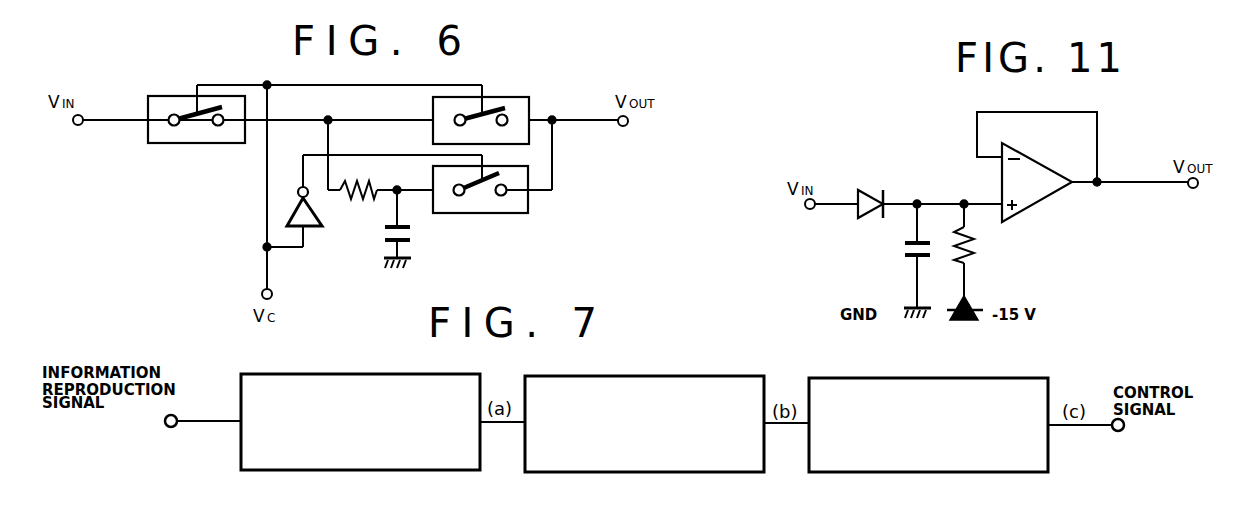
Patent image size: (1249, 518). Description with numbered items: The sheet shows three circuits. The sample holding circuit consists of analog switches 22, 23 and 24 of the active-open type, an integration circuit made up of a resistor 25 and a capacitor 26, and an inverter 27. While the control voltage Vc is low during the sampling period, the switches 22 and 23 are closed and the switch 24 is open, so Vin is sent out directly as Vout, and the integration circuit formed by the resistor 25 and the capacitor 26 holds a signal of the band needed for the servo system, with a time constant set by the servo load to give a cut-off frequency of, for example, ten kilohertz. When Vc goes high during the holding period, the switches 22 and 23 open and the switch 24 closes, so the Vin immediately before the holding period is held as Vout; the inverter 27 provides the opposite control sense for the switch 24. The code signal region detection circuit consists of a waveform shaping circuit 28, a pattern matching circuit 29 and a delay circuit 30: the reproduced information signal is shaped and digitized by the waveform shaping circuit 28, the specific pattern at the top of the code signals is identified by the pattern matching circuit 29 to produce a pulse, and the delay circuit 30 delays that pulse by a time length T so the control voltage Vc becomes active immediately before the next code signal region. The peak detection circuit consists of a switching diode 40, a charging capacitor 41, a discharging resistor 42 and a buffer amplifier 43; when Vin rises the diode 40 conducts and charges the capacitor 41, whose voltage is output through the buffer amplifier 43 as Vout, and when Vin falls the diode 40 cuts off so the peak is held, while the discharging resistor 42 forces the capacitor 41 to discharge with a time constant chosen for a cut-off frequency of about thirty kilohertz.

In FIG. 6, the analog switch 22 is at (163, 96).
In FIG. 6, the analog switch 23 is at (517, 97).
In FIG. 6, the analog switch 24 is at (481, 213).
In FIG. 6, the resistor 25 is at (357, 200).
In FIG. 6, the capacitor 26 is at (410, 238).
In FIG. 6, the inverter 27 is at (318, 228).
In FIG. 7, the waveform shaping circuit 28 is at (420, 374).
In FIG. 7, the pattern matching circuit 29 is at (673, 360).
In FIG. 7, the delay circuit 30 is at (948, 360).
In FIG. 11, the switching diode 40 is at (865, 192).
In FIG. 11, the charging capacitor 41 is at (903, 250).
In FIG. 11, the discharging resistor 42 is at (975, 245).
In FIG. 11, the buffer amplifier 43 is at (1040, 200).